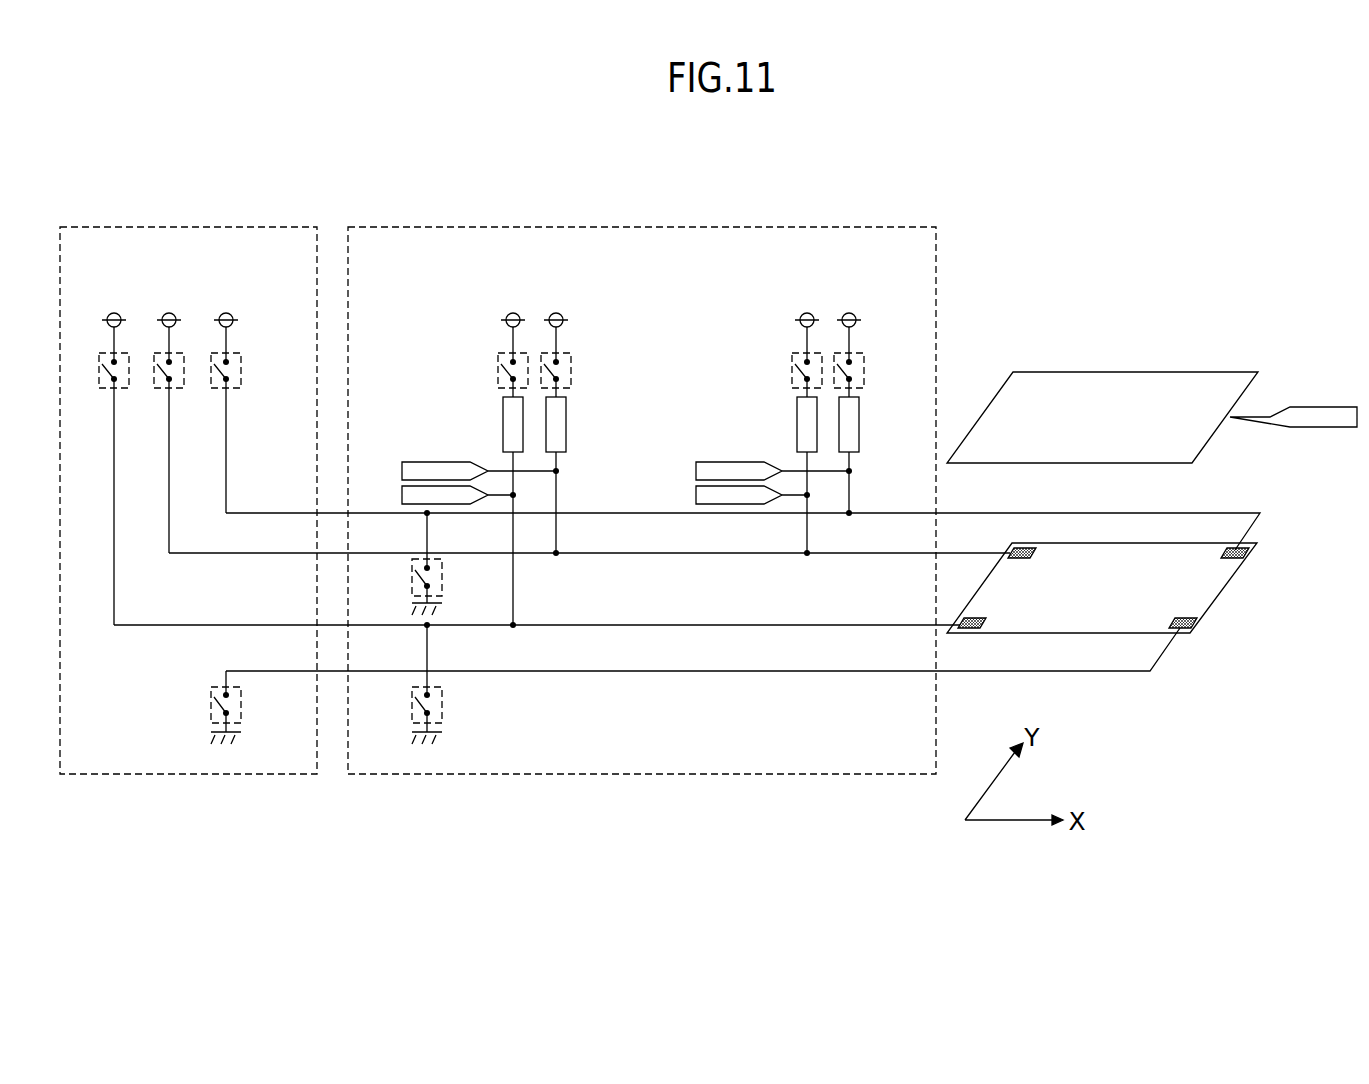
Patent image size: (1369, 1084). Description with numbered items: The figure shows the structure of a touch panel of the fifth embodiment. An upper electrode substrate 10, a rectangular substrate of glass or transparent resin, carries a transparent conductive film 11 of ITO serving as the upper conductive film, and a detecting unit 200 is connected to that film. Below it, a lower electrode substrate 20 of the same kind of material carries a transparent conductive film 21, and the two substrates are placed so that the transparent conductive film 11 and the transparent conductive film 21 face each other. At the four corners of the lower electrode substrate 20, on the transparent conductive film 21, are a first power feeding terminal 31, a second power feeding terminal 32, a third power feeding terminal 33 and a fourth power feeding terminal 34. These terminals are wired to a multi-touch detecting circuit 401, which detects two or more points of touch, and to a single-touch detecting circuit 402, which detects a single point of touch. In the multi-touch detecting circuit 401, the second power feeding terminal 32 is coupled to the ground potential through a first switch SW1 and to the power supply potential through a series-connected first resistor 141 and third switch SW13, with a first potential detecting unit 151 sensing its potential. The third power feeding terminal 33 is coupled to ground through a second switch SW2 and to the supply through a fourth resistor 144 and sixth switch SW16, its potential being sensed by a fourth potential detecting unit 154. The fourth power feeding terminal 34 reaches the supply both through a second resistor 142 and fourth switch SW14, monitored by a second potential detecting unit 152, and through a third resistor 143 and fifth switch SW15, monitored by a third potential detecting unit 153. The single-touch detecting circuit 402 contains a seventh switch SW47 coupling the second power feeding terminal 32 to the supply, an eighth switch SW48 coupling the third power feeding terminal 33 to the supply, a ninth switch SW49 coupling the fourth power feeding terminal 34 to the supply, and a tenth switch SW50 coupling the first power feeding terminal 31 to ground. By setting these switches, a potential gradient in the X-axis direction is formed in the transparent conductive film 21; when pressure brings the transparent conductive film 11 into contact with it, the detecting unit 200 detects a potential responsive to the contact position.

The single-touch detecting circuit 402 is at (188, 227).
The multi-touch detecting circuit 401 is at (638, 227).
The eighth switch SW48 is at (100, 352).
The ninth switch SW49 is at (175, 352).
The seventh switch SW47 is at (232, 352).
The sixth switch SW16 is at (505, 352).
The fifth switch SW15 is at (548, 352).
The fourth switch SW14 is at (798, 352).
The third switch SW13 is at (858, 352).
The fourth resistor 144 is at (503, 412).
The third resistor 143 is at (566, 422).
The second resistor 142 is at (797, 424).
The first resistor 141 is at (859, 422).
The fourth potential detecting unit 154 is at (402, 492).
The third potential detecting unit 153 is at (437, 462).
The first potential detecting unit 151 is at (696, 471).
The second potential detecting unit 152 is at (696, 495).
The first switch SW1 is at (442, 577).
The second switch SW2 is at (442, 704).
The tenth switch SW50 is at (209, 706).
The upper electrode substrate 10 is at (1068, 372).
The transparent conductive film 11 is at (1131, 391).
The detecting unit 200 is at (1318, 407).
The lower electrode substrate 20 is at (1083, 634).
The transparent conductive film 21 is at (1143, 612).
The fourth power feeding terminal 34 is at (1028, 548).
The second power feeding terminal 32 is at (1249, 548).
The third power feeding terminal 33 is at (984, 623).
The first power feeding terminal 31 is at (1197, 620).